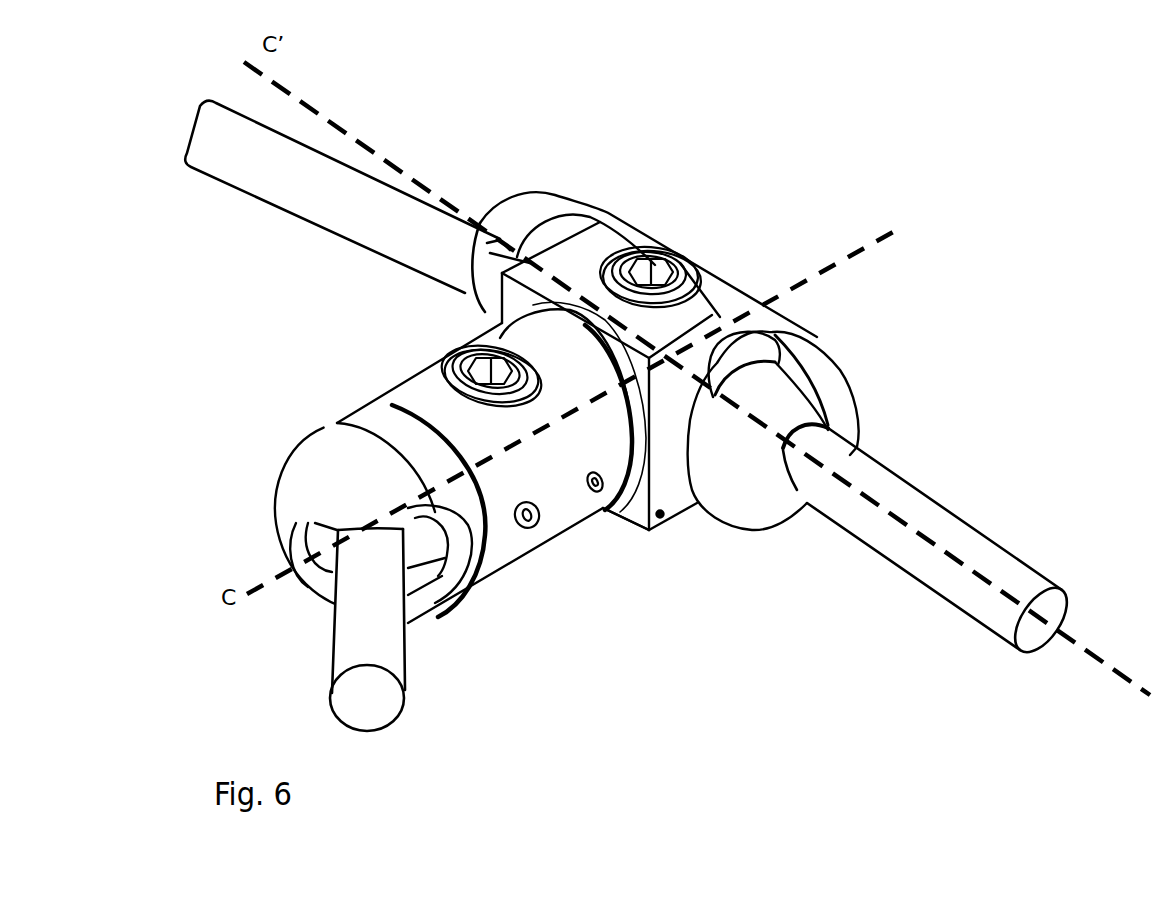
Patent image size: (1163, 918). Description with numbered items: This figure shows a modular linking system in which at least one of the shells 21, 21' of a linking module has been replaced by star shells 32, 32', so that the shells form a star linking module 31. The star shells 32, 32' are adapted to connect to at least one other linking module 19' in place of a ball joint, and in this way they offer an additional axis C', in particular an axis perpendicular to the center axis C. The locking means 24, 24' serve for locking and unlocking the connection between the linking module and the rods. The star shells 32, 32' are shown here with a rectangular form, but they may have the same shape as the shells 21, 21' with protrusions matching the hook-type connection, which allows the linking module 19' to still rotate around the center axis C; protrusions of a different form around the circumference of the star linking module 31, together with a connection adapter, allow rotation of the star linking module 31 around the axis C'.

The linking module 19' is at (648, 450).
The shell 21 is at (553, 571).
The shell 21' is at (447, 462).
The locking means 24 is at (444, 361).
The locking means 24' is at (689, 234).
The star linking module 31 is at (838, 313).
The star shell 32 is at (675, 618).
The star shell 32' is at (759, 259).